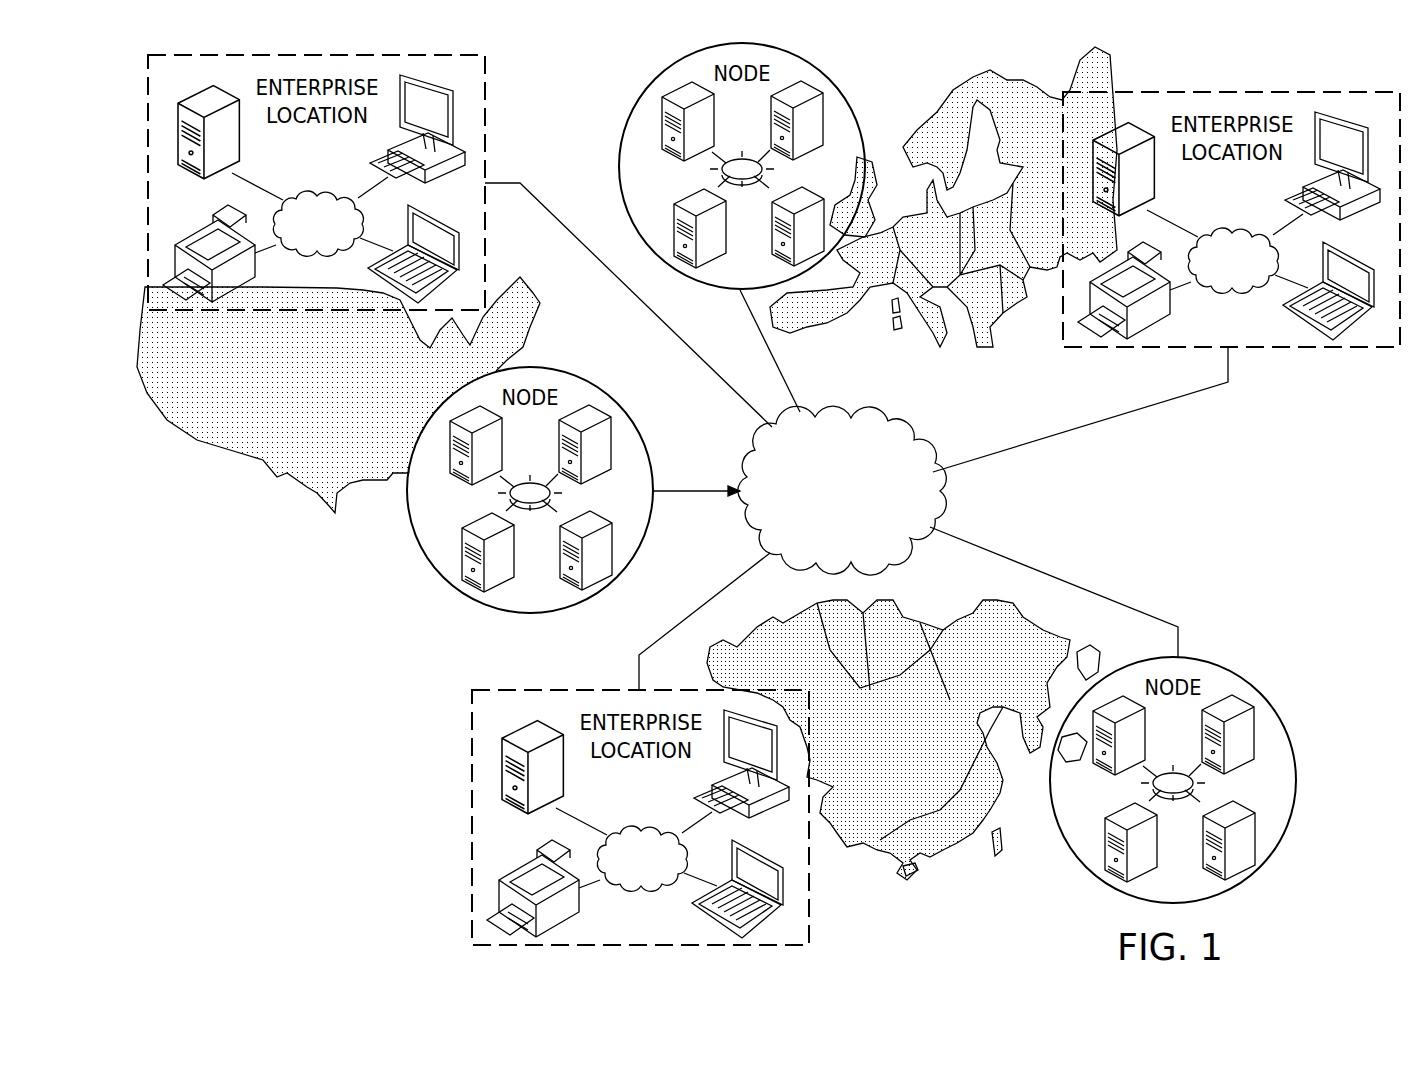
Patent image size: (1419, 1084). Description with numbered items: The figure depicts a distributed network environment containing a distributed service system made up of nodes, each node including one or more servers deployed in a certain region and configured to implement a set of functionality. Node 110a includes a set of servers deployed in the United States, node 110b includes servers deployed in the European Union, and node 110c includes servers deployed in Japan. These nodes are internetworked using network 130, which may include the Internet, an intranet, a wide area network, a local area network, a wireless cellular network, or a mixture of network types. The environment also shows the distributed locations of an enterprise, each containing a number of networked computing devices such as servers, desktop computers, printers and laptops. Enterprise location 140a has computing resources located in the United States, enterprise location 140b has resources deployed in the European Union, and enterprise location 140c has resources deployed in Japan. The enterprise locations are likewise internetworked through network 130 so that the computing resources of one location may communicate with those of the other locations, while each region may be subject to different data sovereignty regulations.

The node 110a is at (578, 372).
The node 110b is at (626, 111).
The node 110c is at (1294, 821).
The network 130 is at (822, 526).
The enterprise location 140a is at (291, 165).
The enterprise location 140b is at (1206, 202).
The enterprise location 140c is at (615, 800).